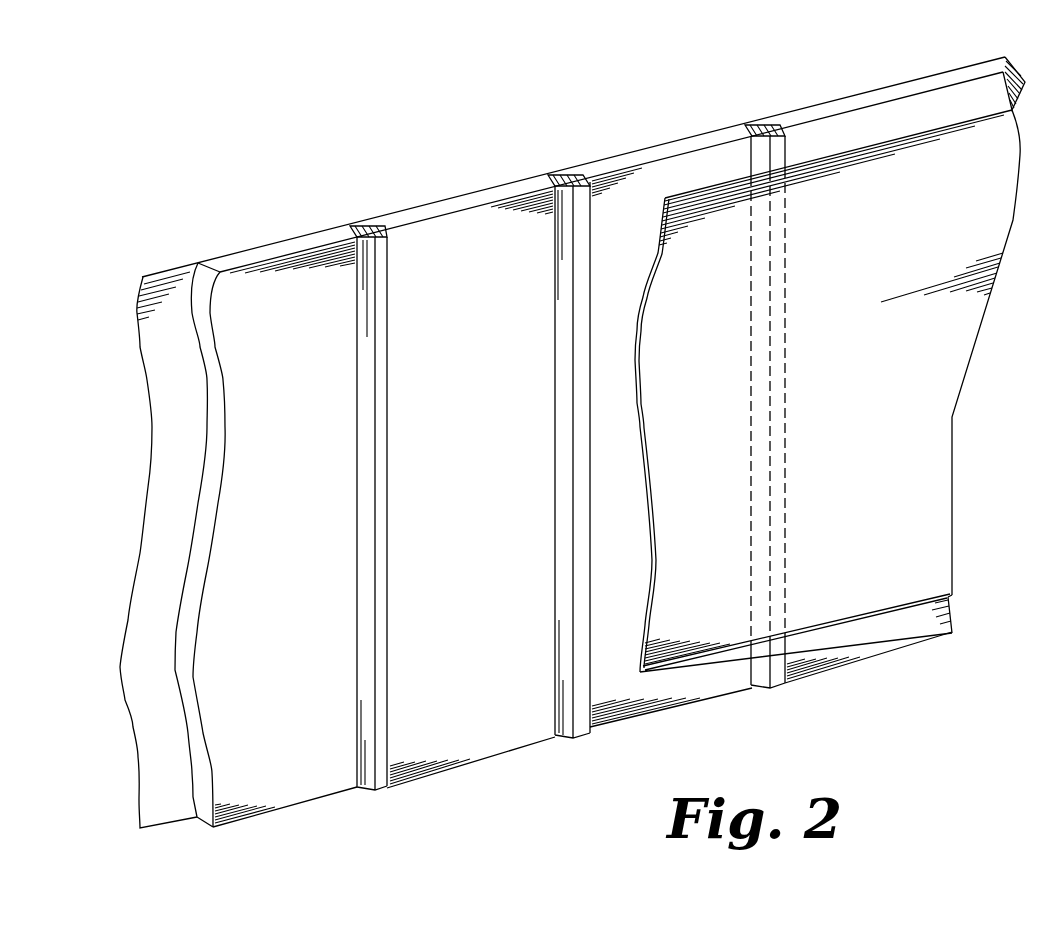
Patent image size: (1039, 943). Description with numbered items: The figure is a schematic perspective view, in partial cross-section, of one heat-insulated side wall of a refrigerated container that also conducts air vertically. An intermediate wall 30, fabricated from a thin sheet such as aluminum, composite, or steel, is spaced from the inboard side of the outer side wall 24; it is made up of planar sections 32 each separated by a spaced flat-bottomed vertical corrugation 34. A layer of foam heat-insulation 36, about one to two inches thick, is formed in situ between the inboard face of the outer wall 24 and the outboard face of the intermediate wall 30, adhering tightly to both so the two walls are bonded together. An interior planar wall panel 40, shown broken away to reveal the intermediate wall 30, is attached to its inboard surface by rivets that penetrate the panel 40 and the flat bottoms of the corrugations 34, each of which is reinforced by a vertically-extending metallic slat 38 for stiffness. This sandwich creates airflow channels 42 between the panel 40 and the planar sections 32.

The outer side wall 24 is at (150, 280).
The intermediate wall 30 is at (485, 205).
The planar sections 32 is at (297, 599).
The flat-bottomed vertical corrugation 34 is at (388, 432).
The foam heat-insulation 36 is at (294, 247).
The vertically-extending metallic slat 38 is at (378, 236).
The interior planar wall panel 40 is at (908, 394).
The airflow channels 42 is at (683, 183).